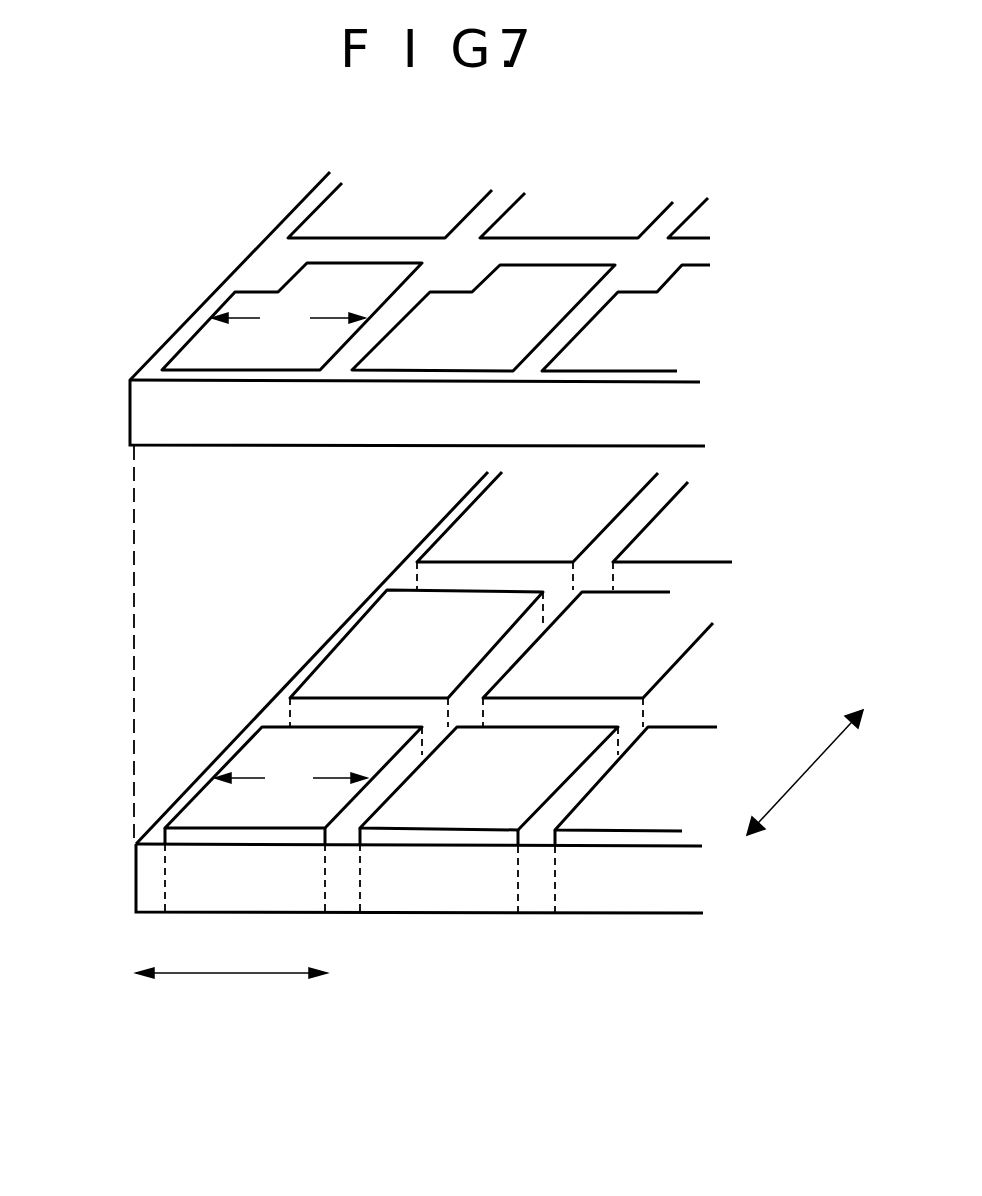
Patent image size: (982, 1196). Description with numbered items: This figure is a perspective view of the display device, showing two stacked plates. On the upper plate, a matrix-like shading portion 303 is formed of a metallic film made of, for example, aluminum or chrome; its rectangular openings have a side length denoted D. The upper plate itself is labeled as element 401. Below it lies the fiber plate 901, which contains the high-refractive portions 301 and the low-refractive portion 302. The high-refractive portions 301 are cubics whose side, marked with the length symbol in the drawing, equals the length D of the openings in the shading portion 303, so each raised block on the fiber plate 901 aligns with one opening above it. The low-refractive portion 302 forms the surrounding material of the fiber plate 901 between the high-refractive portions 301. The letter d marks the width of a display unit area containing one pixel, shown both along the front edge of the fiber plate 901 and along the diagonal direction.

The high-refractive portions 301 is at (242, 758).
The low-refractive portion 302 is at (170, 807).
The matrix-like shading portion 303 is at (263, 262).
The upper substrate 401 is at (130, 413).
The fiber plate 901 is at (137, 878).